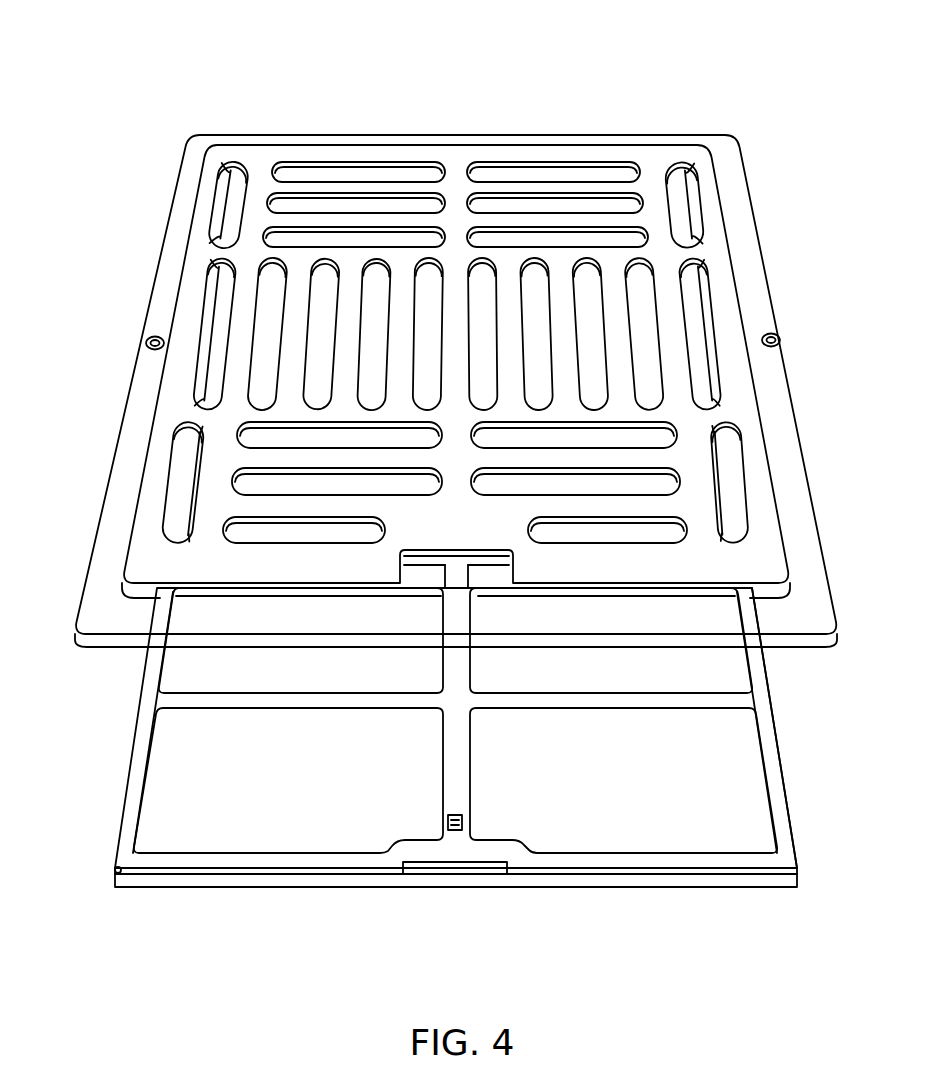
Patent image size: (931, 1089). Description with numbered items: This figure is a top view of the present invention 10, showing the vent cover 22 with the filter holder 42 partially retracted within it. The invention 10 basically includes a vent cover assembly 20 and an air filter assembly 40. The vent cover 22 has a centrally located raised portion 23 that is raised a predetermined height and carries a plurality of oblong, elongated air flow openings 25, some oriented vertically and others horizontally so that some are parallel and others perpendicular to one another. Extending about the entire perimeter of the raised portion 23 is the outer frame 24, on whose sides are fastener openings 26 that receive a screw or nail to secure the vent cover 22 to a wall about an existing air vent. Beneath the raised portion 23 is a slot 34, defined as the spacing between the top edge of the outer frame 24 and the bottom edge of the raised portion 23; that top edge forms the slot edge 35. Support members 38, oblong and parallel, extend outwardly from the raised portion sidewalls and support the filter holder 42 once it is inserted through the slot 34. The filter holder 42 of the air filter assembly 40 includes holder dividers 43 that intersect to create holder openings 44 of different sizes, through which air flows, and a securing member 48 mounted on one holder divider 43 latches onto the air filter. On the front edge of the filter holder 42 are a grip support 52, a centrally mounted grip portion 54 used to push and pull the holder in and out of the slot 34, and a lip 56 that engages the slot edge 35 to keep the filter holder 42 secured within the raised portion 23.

The present invention 10 is at (146, 103).
The vent cover assembly 20 is at (160, 240).
The vent cover 22 is at (148, 283).
The raised portion 23 is at (757, 553).
The outer frame 24 is at (778, 443).
The air flow openings 25 is at (641, 305).
The fastener opening 26 is at (778, 340).
The slot 34 is at (157, 603).
The slot edge 35 is at (585, 603).
The support members 38 is at (688, 208).
The air filter assembly 40 is at (140, 750).
The filter holder 42 is at (768, 705).
The holder dividers 43 is at (320, 703).
The holder openings 44 is at (706, 793).
The securing member 48 is at (466, 820).
The grip support 52 is at (114, 870).
The grip portion 54 is at (447, 868).
The lip 56 is at (305, 880).